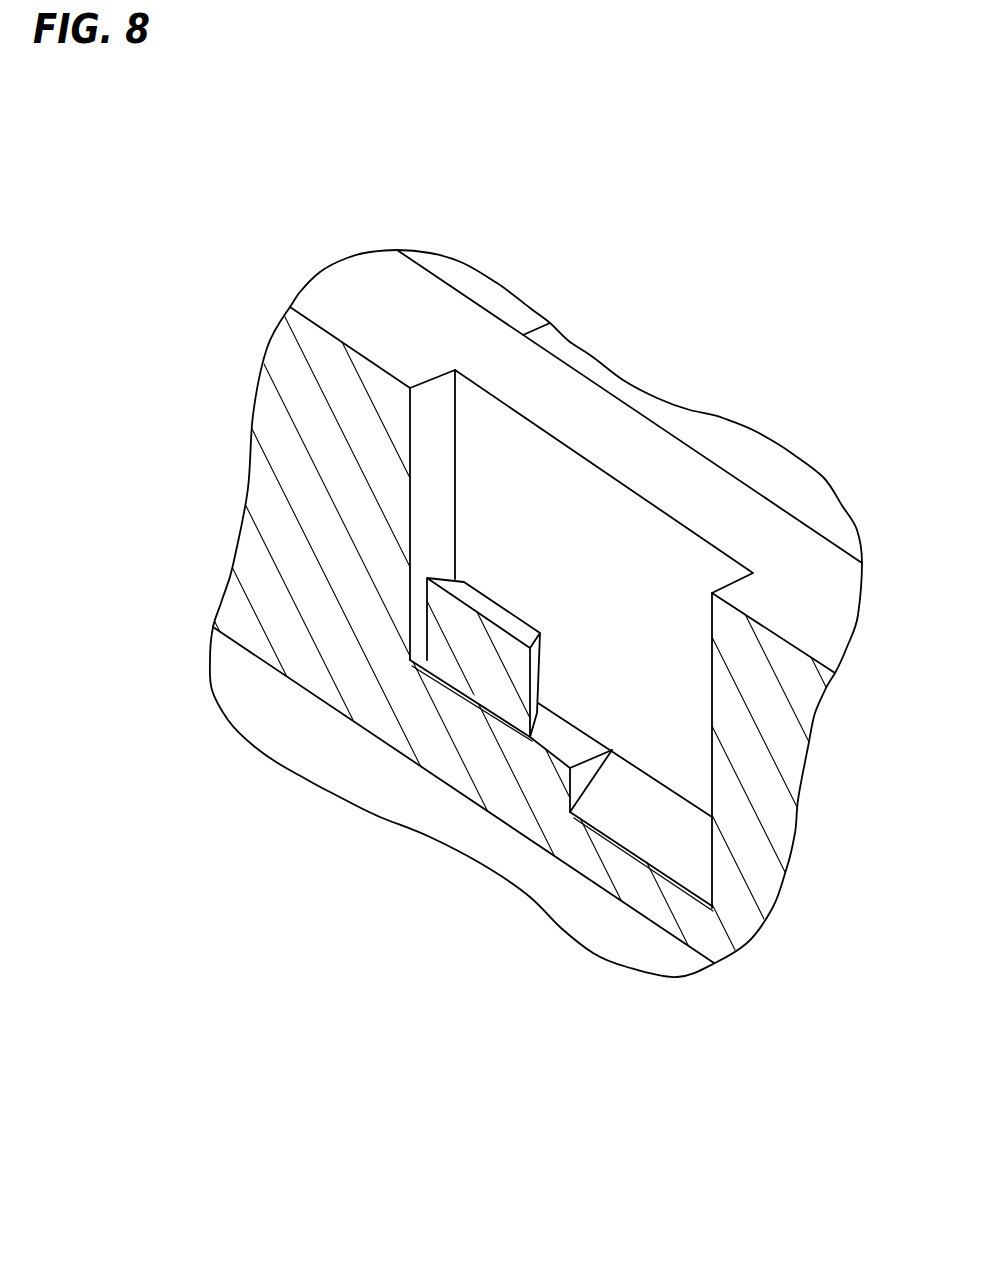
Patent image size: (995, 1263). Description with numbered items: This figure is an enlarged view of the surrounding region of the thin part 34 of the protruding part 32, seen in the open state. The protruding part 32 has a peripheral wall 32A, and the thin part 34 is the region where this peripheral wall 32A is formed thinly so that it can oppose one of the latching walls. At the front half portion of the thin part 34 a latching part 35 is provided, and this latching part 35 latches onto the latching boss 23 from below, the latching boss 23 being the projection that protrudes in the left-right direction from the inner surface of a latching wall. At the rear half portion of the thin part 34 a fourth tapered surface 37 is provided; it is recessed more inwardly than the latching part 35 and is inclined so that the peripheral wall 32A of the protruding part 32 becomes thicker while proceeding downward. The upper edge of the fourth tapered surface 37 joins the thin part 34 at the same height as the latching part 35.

The protruding part 32 is at (755, 857).
The peripheral wall 32A is at (712, 925).
The thin part 34 is at (613, 563).
The latching boss 23 is at (467, 650).
The latching part 35 is at (557, 733).
The fourth tapered surface 37 is at (643, 817).